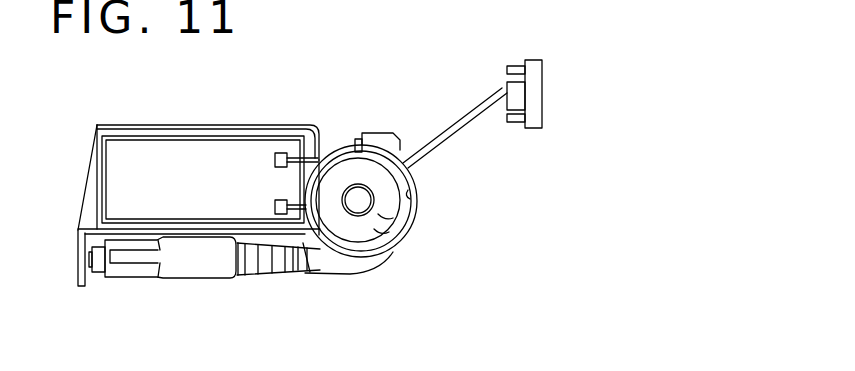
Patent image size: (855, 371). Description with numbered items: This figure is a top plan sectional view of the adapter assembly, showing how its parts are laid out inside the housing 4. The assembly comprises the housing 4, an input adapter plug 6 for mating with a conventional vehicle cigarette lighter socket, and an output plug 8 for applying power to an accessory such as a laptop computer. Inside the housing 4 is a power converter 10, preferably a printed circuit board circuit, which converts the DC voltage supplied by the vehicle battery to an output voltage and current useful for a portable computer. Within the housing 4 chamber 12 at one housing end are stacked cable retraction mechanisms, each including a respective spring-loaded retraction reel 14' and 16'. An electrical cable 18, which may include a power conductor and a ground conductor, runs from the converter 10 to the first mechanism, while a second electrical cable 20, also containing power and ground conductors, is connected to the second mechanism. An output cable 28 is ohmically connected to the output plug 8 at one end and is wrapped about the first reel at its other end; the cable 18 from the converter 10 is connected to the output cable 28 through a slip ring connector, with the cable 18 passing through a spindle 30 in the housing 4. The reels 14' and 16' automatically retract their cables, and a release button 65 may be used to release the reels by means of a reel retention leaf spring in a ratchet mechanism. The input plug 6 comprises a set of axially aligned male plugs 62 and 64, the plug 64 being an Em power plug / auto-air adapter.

The housing 4 is at (231, 127).
The input adapter plug 6 is at (148, 287).
The output plug 8 is at (546, 62).
The power converter 10 is at (128, 157).
The chamber 12 is at (411, 196).
The retraction reel 14' is at (408, 200).
The retraction reel 16' is at (394, 265).
The electrical cable 18 is at (313, 172).
The second electrical cable 20 is at (300, 198).
The output cable 28 is at (472, 113).
The spindle 30 is at (357, 207).
The male plug 62 is at (204, 280).
The male plug 64 is at (290, 273).
The release button 65 is at (383, 124).